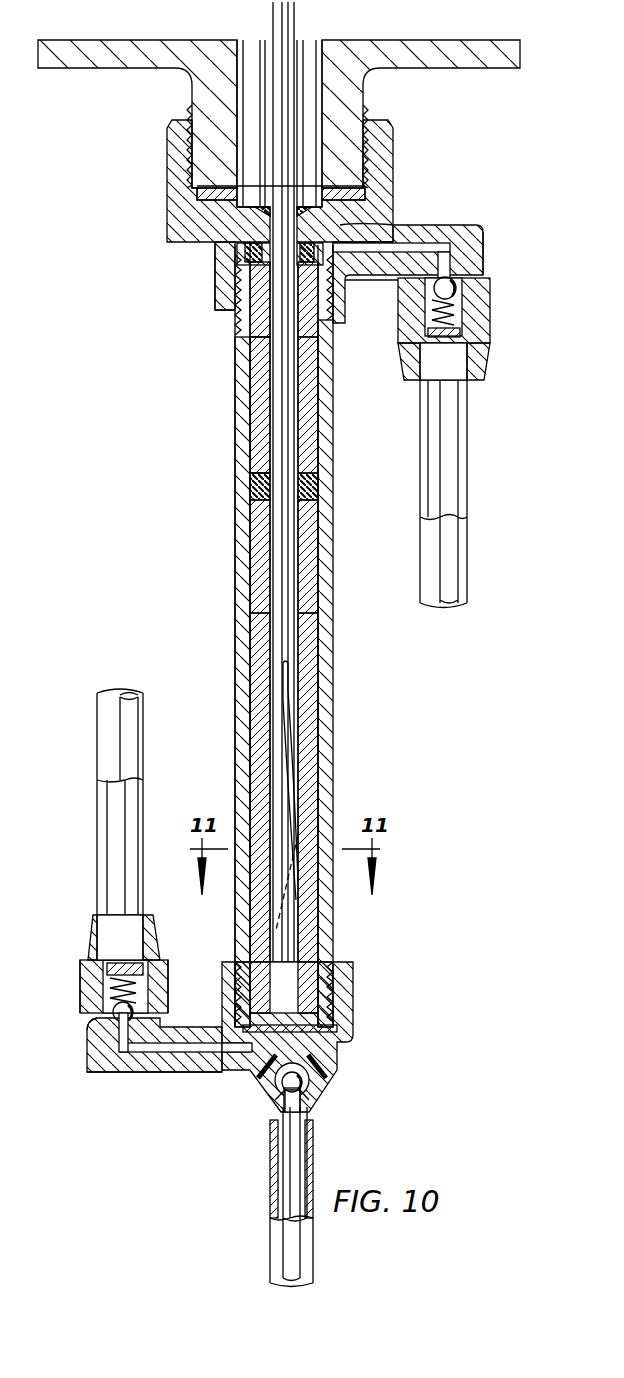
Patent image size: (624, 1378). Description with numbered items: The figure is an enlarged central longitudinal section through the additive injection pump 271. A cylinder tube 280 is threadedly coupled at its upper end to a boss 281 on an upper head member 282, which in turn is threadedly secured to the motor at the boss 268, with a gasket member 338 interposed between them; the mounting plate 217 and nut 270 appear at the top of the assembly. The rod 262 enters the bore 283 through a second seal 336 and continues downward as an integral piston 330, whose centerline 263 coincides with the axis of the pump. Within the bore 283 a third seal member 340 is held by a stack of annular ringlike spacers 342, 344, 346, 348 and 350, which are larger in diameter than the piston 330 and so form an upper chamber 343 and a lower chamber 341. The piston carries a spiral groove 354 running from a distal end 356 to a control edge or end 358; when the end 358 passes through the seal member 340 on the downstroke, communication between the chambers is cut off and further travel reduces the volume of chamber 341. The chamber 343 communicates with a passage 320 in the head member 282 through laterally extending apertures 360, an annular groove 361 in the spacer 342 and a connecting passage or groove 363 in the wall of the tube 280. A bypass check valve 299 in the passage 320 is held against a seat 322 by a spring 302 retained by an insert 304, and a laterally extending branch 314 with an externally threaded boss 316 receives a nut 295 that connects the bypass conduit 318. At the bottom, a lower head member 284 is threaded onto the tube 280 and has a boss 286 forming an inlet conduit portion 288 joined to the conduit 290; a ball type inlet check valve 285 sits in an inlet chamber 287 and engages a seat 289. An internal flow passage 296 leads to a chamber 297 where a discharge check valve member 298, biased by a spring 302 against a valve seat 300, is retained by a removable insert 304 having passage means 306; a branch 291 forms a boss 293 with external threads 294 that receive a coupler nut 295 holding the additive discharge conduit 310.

The mounting plate 217 is at (470, 70).
The rod 262 is at (294, 50).
The central rod 263 is at (296, 386).
The boss 268 is at (365, 92).
The nut 270 is at (393, 152).
The additive injection pump 271 is at (235, 517).
The cylinder tube 280 is at (240, 418).
The boss 281 is at (215, 286).
The upper head member 282 is at (197, 194).
The bore 283 is at (253, 356).
The lower head member 284 is at (356, 1014).
The inlet check valve 285 is at (316, 1082).
The boss 286 is at (320, 1100).
The inlet chamber 287 is at (326, 1056).
The inlet conduit portion 288 is at (310, 1128).
The seat 289 is at (268, 1088).
The conduit 290 is at (313, 1240).
The branch 291 is at (145, 1073).
The boss 293 is at (87, 1030).
The external threads 294 is at (103, 980).
The coupler nut 295 is at (490, 306).
The internal flow passage 296 is at (178, 1055).
The chamber 297 is at (85, 998).
The discharge check valve member 298 is at (134, 1010).
The bypass check valve 299 is at (470, 282).
The valve seat 300 is at (87, 1058).
The spring 302 is at (468, 330).
The removable insert 304 is at (470, 354).
The passage means 306 is at (418, 345).
The additive discharge conduit 310 is at (97, 803).
The laterally extending branch 314 is at (480, 225).
The externally threaded boss 316 is at (483, 268).
The additive fluid bypass conduit 318 is at (468, 486).
The passage 320 is at (483, 240).
The seat 322 is at (400, 284).
The piston 330 is at (292, 924).
The second seal 336 is at (258, 214).
The gasket member 338 is at (197, 186).
The third seal member 340 is at (300, 486).
The chamber 341 is at (300, 572).
The spacer 342 is at (240, 320).
The chamber 343 is at (300, 418).
The spacer 344 is at (246, 386).
The spacer 346 is at (252, 450).
The spacer 348 is at (250, 586).
The spacer 350 is at (252, 698).
The spiral groove 354 is at (288, 705).
The distal end 356 is at (322, 1030).
The end of the groove 358 is at (290, 664).
The laterally extending apertures 360 is at (245, 262).
The annular groove 361 is at (245, 252).
The connecting passage 363 is at (380, 226).